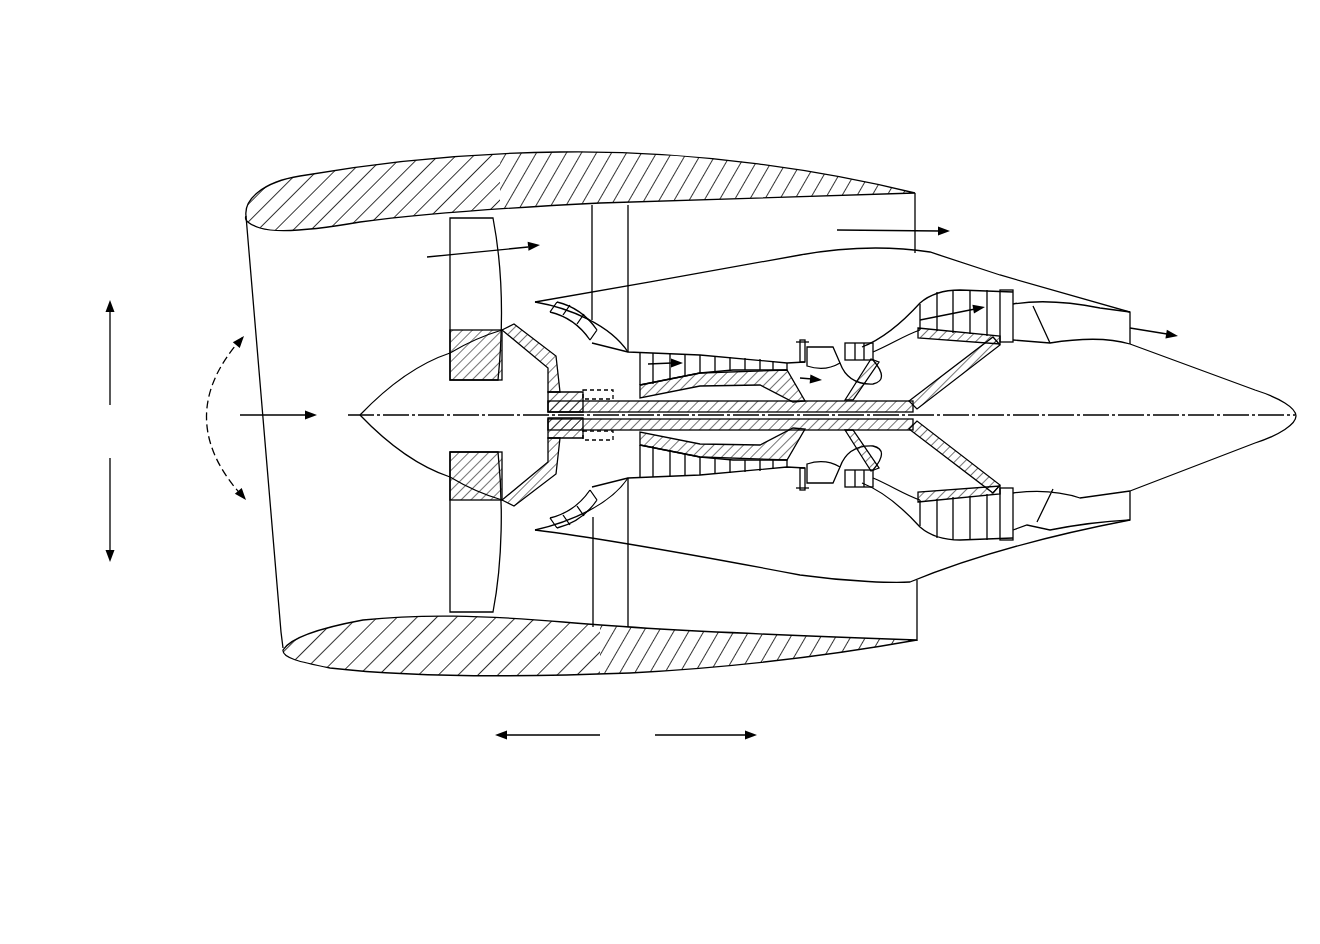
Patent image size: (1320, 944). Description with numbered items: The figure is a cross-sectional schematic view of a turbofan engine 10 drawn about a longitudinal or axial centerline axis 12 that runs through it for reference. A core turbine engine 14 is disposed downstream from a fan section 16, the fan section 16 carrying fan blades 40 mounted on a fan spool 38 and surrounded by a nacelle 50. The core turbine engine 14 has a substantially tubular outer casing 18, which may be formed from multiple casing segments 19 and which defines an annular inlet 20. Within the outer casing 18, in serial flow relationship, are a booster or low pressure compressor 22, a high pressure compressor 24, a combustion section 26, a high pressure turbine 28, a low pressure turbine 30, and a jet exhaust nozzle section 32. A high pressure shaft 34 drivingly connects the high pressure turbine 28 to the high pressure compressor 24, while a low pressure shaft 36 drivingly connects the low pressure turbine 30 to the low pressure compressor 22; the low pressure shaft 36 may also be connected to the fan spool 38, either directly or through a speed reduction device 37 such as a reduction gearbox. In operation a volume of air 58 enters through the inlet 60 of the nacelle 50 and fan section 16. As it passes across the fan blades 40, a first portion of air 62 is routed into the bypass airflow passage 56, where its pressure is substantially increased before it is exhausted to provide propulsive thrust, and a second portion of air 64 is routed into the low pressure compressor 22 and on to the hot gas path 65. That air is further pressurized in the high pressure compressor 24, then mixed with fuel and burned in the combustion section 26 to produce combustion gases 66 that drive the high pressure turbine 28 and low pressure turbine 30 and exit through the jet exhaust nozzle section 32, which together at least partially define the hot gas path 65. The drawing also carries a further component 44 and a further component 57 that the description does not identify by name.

The turbofan engine 10 is at (1058, 166).
The longitudinal centerline axis 12 is at (1075, 408).
The core turbine engine 14 is at (781, 303).
The fan section 16 is at (508, 132).
The outer casing 18 is at (782, 573).
The casing segments 19 is at (852, 480).
The annular inlet 20 is at (540, 517).
The low pressure compressor 22 is at (590, 484).
The high pressure compressor 24 is at (658, 470).
The combustion section 26 is at (818, 487).
The high pressure turbine 28 is at (888, 483).
The low pressure turbine 30 is at (996, 545).
The jet exhaust nozzle section 32 is at (1133, 322).
The high pressure shaft 34 is at (842, 384).
The low pressure shaft 36 is at (580, 398).
The speed reduction device 37 is at (604, 388).
The fan spool 38 is at (473, 387).
The fan blades 40 is at (443, 557).
The outlet guide vanes 44 is at (628, 238).
The nacelle 50 is at (493, 673).
The bypass airflow passage 56 is at (723, 252).
The fan nozzle exhaust section 57 is at (914, 206).
The volume of air 58 is at (274, 412).
The inlet 60 is at (278, 620).
The first portion of air 62 is at (440, 248).
The second portion of air 64 is at (517, 315).
The hot gas path 65 is at (800, 376).
The combustion gases 66 is at (863, 350).